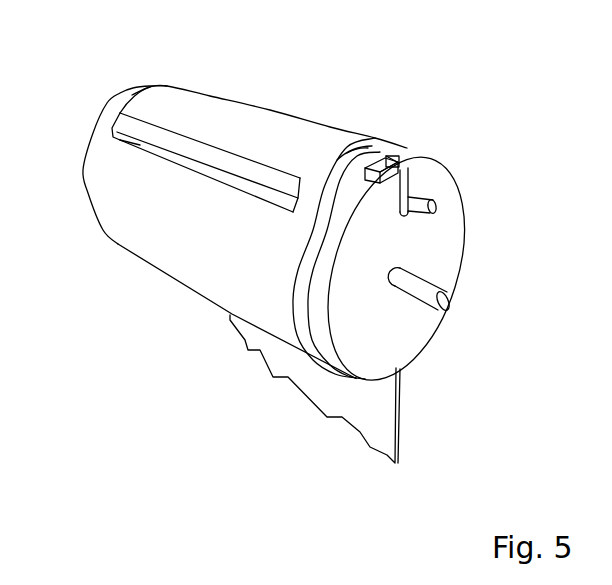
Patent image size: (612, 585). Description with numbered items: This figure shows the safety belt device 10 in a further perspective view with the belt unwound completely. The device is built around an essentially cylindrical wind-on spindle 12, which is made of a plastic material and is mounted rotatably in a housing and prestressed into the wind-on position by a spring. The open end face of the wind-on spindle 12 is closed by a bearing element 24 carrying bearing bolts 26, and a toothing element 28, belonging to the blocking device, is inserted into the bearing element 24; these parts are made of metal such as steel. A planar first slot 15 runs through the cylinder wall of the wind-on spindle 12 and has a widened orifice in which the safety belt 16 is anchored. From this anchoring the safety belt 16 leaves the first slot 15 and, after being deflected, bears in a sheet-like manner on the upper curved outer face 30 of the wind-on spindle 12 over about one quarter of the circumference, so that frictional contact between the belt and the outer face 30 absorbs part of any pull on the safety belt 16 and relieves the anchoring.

The safety belt device 10 is at (437, 93).
The wind-on spindle 12 is at (128, 232).
The first slot 15 is at (118, 133).
The safety belt 16 is at (287, 127).
The bearing element 24 is at (448, 238).
The bearing bolt 26 is at (440, 300).
The toothing element 28 is at (383, 152).
The upper curved outer face 30 is at (405, 152).